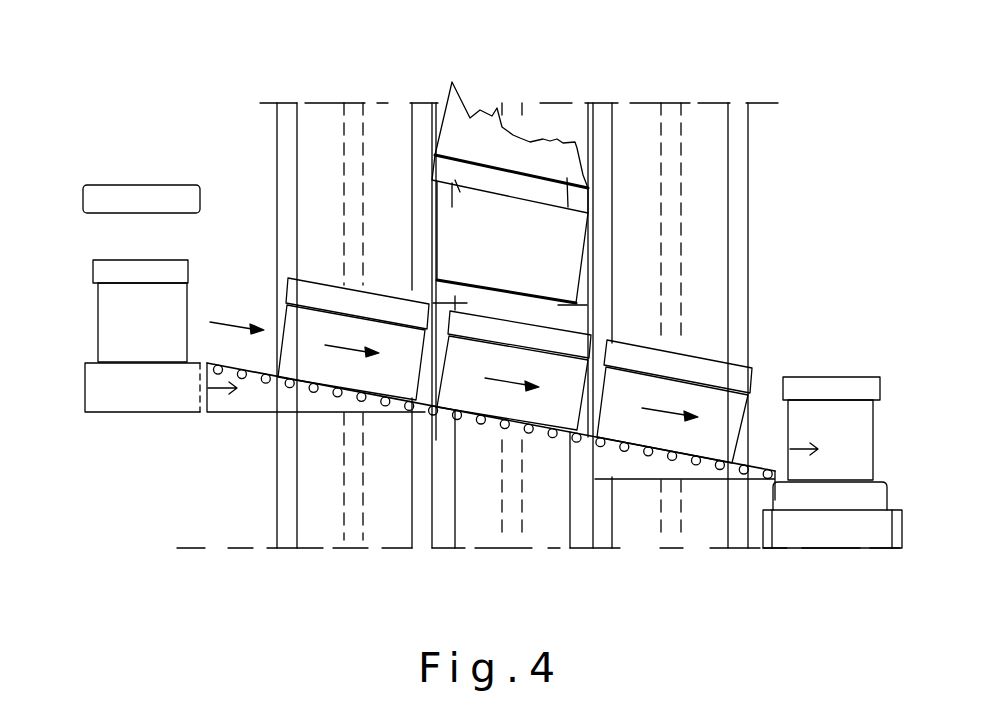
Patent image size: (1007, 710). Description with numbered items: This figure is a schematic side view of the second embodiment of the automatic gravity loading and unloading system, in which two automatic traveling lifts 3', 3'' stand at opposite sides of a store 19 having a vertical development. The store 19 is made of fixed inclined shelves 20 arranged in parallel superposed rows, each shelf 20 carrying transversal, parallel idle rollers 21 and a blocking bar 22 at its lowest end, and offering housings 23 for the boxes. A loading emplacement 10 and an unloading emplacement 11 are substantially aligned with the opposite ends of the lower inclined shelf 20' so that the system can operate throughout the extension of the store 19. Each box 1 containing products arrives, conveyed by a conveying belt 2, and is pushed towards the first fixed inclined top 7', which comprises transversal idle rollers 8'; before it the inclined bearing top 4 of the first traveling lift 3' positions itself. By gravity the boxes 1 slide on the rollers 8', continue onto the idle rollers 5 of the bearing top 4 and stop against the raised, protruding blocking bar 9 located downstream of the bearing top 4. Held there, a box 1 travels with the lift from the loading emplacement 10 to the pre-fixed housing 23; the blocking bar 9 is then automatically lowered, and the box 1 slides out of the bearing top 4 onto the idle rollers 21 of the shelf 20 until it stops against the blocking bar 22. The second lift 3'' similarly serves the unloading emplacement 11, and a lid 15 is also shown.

The box 1 is at (174, 273).
The conveying belt 2 is at (117, 400).
The traveling lift 3' is at (258, 325).
The traveling lift 3'' is at (771, 325).
The inclined bearing top 4 is at (293, 378).
The idle rollers 5 is at (327, 390).
The fixed inclined top 7' is at (227, 323).
The idle rollers 8' is at (238, 421).
The blocking bar 9 is at (410, 408).
The loading emplacement 10 is at (204, 388).
The unloading emplacement 11 is at (824, 491).
The lid 15 is at (118, 198).
The store 19 is at (585, 123).
The shelf 20 is at (570, 302).
The lower inclined shelf 20' is at (510, 509).
The idle rollers 21 is at (497, 422).
The blocking bar 22 is at (590, 440).
The housing 23 is at (457, 183).